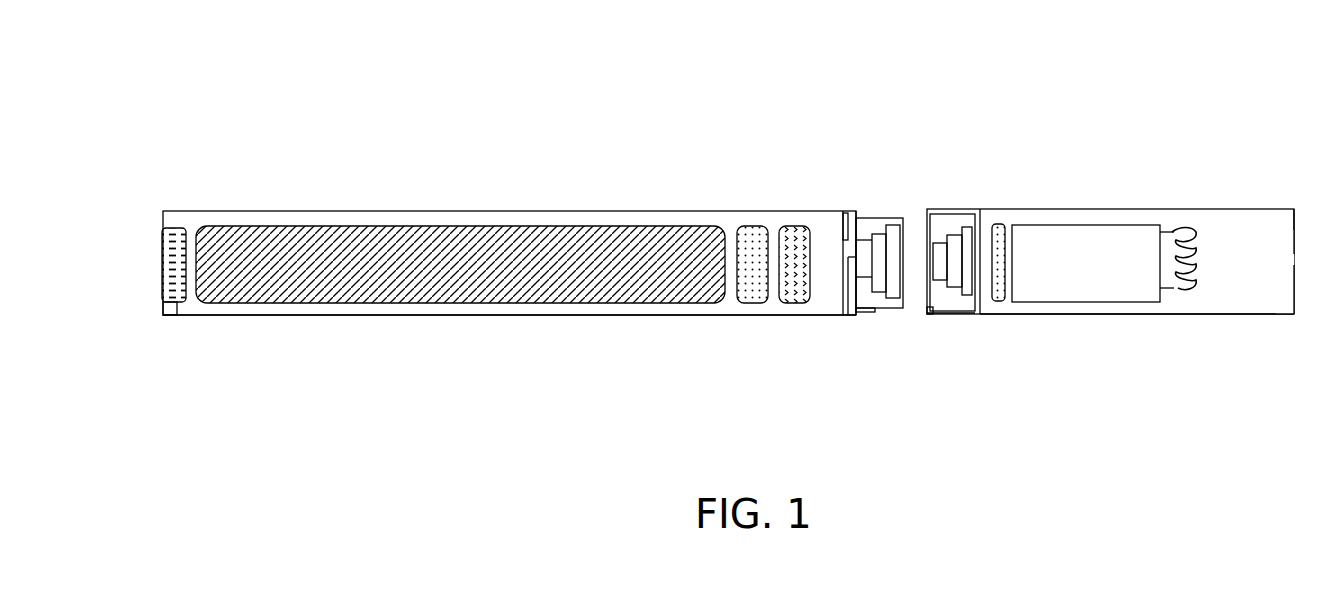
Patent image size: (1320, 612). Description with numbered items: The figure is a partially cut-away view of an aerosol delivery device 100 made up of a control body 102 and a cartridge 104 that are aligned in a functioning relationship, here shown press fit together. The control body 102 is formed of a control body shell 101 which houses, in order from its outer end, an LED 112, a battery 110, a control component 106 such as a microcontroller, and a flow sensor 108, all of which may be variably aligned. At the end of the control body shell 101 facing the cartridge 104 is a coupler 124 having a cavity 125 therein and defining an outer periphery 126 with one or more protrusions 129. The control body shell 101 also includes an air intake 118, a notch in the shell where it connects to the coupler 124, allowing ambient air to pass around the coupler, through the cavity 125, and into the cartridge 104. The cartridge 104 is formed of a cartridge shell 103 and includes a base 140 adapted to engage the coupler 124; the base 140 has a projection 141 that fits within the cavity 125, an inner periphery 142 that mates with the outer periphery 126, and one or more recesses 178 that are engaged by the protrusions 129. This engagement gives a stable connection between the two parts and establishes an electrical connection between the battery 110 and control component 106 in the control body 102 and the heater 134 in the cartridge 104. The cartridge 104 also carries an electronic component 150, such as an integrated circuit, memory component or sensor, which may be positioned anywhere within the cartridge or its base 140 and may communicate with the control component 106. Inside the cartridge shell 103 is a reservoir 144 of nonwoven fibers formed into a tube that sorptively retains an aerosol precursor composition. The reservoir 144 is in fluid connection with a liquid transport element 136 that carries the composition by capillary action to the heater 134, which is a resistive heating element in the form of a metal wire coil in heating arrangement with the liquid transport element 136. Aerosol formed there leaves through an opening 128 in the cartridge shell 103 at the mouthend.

The aerosol delivery device 100 is at (214, 88).
The control body 102 is at (205, 172).
The cartridge 104 is at (1096, 177).
The control body shell 101 is at (285, 316).
The LED 112 is at (173, 302).
The battery 110 is at (400, 303).
The control component 106 is at (755, 303).
The flow sensor 108 is at (797, 303).
The air intake 118 is at (842, 212).
The coupler 124 is at (883, 311).
The cavity 125 is at (870, 216).
The outer periphery 126 is at (895, 216).
The protrusion 129 is at (860, 315).
The inner periphery 142 is at (912, 214).
The base 140 is at (978, 314).
The projection 141 is at (940, 213).
The recess 178 is at (948, 314).
The electronic component 150 is at (997, 302).
The cartridge shell 103 is at (1048, 315).
The reservoir 144 is at (1108, 302).
The liquid transport element 136 is at (1173, 302).
The heater 134 is at (1195, 287).
The opening 128 is at (1292, 255).